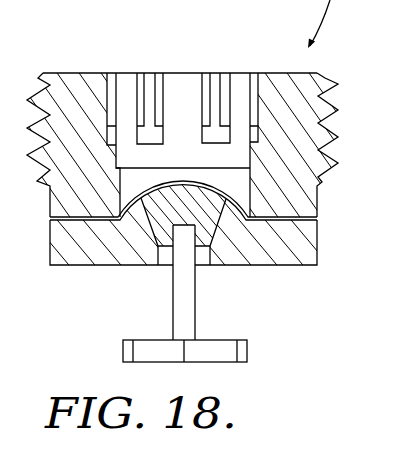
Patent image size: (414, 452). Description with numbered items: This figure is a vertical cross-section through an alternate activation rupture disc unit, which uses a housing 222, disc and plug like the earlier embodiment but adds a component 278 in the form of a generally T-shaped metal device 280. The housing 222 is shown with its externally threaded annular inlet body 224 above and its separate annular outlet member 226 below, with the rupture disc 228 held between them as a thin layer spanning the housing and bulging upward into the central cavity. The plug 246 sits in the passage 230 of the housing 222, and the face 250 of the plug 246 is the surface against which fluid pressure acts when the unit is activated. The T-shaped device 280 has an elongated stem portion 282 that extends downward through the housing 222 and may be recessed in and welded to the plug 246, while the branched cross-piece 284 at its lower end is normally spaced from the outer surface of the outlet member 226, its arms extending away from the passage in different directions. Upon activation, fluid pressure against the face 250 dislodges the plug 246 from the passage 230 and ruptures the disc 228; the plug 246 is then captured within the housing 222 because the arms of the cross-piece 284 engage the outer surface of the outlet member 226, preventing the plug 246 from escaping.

The housing 222 is at (96, 71).
The inlet body 224 is at (324, 108).
The outlet member 226 is at (309, 240).
The disc 228 is at (303, 213).
The passage 230 is at (200, 260).
The plug 246 is at (173, 198).
The face 250 is at (168, 258).
The component 278 is at (195, 301).
The T-shaped metal device 280 is at (121, 341).
The stem portion 282 is at (190, 323).
The cross-piece 284 is at (241, 350).